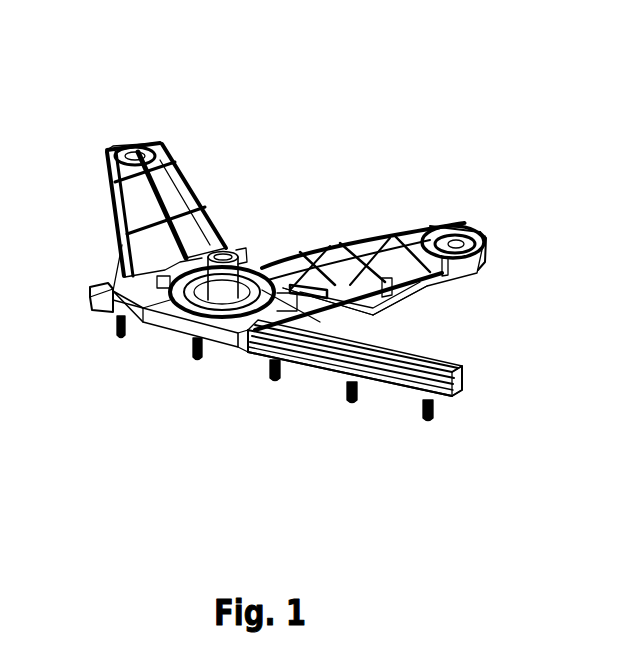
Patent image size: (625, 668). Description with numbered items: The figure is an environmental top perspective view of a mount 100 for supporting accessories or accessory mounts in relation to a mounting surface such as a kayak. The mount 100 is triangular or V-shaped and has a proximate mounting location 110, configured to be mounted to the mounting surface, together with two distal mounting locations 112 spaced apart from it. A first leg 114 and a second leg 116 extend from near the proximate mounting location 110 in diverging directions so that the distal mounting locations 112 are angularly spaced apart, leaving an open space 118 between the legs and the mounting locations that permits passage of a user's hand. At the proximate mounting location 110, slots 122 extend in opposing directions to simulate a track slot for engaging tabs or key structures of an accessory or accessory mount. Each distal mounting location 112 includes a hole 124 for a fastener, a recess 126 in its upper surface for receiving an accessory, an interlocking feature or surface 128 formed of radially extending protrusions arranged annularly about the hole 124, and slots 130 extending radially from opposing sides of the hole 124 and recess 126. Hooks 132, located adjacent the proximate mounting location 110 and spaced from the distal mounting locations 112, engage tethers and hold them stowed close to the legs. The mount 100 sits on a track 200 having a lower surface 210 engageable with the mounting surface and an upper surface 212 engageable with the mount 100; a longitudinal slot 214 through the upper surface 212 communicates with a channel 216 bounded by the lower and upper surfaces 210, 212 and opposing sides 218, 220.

The mount 100 is at (383, 58).
The proximate mounting location 110 is at (165, 362).
The distal mounting locations 112 is at (180, 130).
The first leg 114 is at (228, 238).
The second leg 116 is at (425, 299).
The open space 118 is at (338, 150).
The slots 122 is at (122, 245).
The hole 124 is at (493, 246).
The recess 126 is at (122, 143).
The interlocking feature or surface 128 is at (432, 228).
The slots 130 is at (133, 143).
The hooks 132 is at (118, 316).
The track 200 is at (483, 340).
The lower surface 210 is at (393, 393).
The upper surface 212 is at (447, 362).
The slot 214 is at (407, 362).
The channel 216 is at (463, 387).
The side 218 is at (333, 370).
The side 220 is at (350, 337).